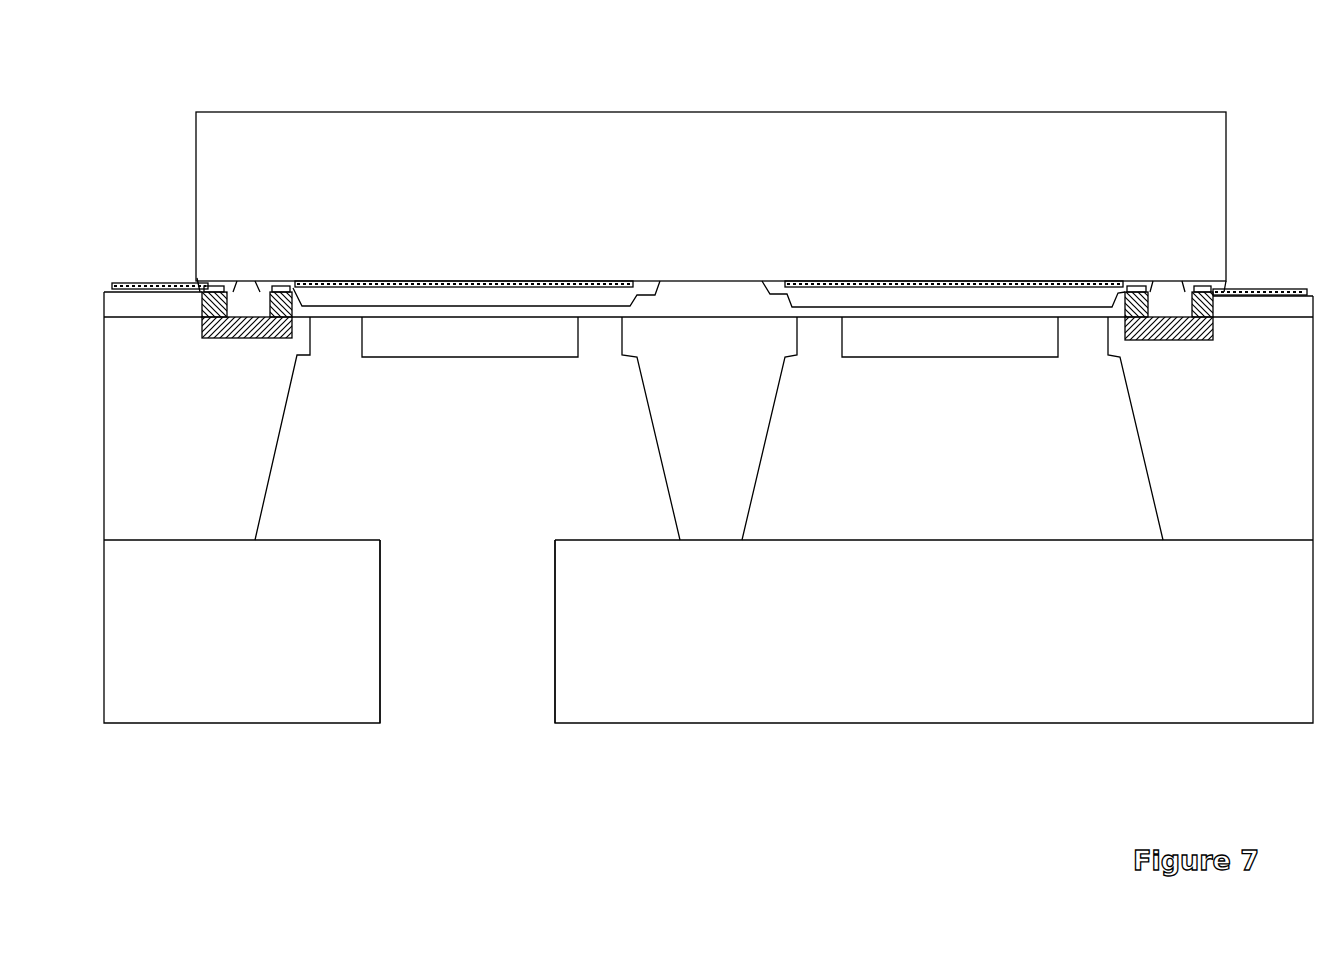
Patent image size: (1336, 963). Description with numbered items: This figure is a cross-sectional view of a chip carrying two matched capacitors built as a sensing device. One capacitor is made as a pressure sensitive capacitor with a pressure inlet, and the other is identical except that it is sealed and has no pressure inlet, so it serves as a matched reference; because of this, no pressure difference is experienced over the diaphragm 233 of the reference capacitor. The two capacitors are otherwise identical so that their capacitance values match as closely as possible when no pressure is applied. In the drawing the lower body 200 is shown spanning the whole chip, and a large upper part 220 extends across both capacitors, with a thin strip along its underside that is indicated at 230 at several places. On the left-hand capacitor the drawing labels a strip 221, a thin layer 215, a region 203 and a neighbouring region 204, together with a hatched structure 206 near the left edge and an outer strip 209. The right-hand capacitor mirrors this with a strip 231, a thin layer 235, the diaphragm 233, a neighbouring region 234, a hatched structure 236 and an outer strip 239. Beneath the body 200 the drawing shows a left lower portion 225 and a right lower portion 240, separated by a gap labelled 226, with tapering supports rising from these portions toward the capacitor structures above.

The substrate 200 is at (165, 466).
The trench 203 is at (339, 318).
The cavity 204 is at (457, 340).
The conductive via 206 is at (202, 338).
The contact pad 209 is at (135, 281).
The membrane 215 is at (512, 300).
The cap wafer 220 is at (220, 140).
The electrode 221 is at (428, 275).
The substrate portion 225 is at (163, 643).
The separating trench 226 is at (468, 702).
The bonding contacts 230 is at (248, 278).
The electrode 231 is at (953, 280).
The diaphragm 233 is at (820, 316).
The cavity 234 is at (918, 338).
The membrane 235 is at (878, 304).
The conductive via 236 is at (1168, 340).
The contact pad 239 is at (1257, 287).
The substrate portion 240 is at (988, 503).